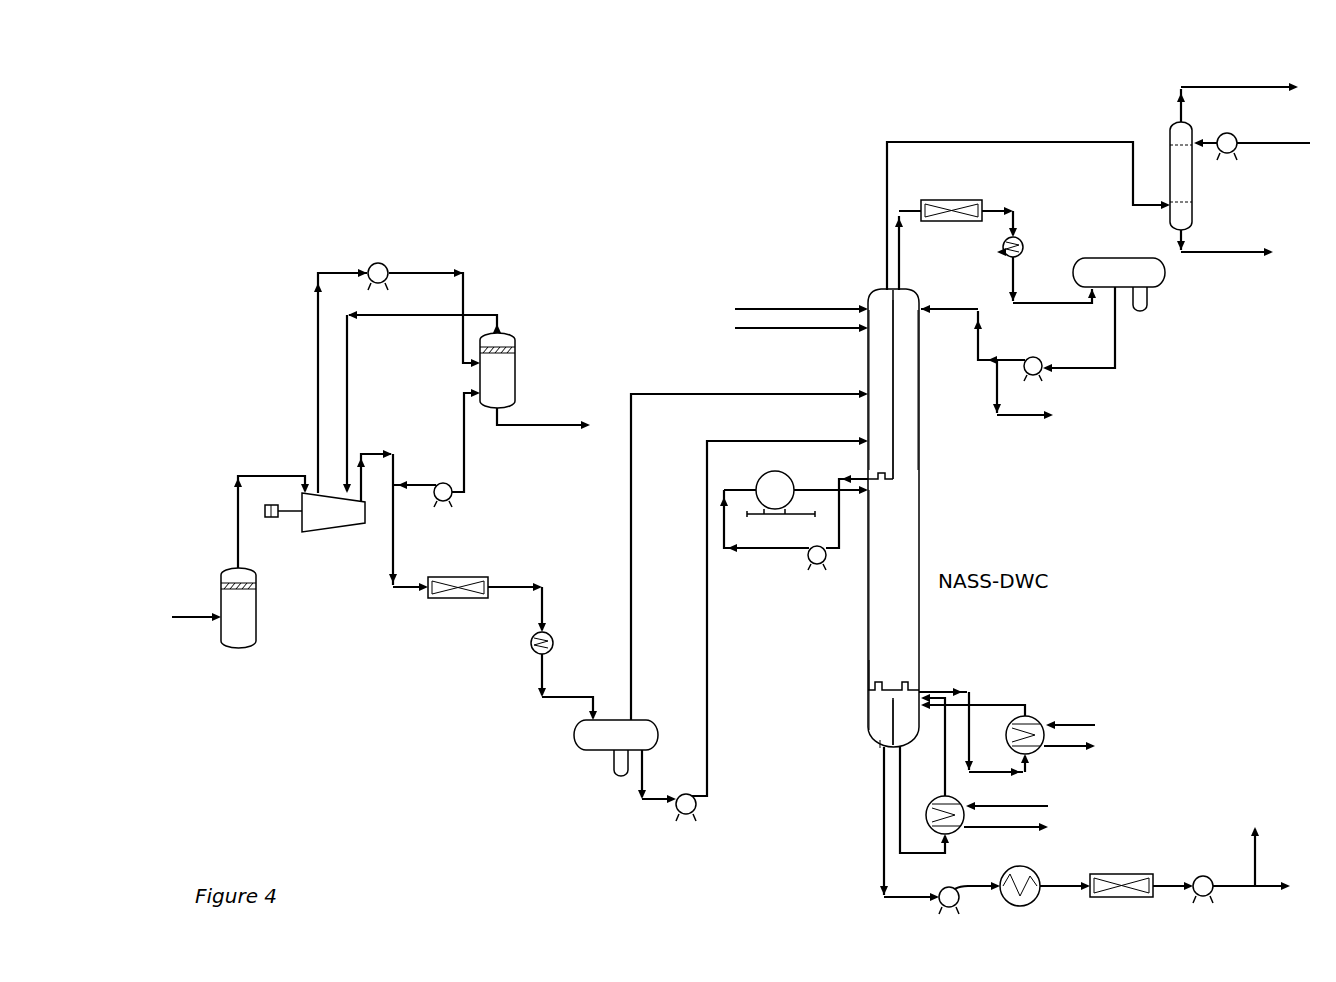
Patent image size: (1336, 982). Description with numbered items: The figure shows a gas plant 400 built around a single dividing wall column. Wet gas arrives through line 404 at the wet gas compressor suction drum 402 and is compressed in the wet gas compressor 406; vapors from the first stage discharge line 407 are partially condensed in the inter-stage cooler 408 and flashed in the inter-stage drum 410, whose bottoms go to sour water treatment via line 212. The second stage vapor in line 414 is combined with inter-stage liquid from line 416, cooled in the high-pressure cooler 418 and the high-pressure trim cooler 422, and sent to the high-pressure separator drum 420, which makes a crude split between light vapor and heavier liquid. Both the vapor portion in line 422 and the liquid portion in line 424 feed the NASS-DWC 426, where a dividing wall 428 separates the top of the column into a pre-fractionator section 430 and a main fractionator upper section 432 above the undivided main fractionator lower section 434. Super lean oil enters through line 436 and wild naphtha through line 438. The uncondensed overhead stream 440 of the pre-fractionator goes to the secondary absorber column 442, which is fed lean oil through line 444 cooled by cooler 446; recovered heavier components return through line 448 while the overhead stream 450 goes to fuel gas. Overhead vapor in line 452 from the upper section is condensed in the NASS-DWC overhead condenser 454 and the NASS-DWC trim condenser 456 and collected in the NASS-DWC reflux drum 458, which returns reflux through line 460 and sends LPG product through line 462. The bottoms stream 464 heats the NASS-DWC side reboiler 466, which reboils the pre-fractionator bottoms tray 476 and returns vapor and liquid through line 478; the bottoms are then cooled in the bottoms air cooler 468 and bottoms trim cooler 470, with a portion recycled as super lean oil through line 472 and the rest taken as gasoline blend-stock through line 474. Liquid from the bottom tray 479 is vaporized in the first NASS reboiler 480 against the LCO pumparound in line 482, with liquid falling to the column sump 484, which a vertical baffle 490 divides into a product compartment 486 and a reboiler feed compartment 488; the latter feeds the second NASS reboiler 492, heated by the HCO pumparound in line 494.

The gas plant 400 is at (274, 155).
The wet gas compressor suction drum 402 is at (256, 607).
The line 404 is at (200, 614).
The wet gas compressor 406 is at (300, 527).
The first stage discharge line 407 is at (318, 372).
The inter-stage cooler 408 is at (377, 262).
The inter-stage drum 410 is at (516, 368).
The line 212 is at (510, 427).
The line 414 is at (358, 458).
The line 416 is at (463, 418).
The high-pressure cooler 418 is at (445, 557).
The high-pressure separator drum 420 is at (575, 730).
The high-pressure trim cooler / vapor portion line 422 is at (528, 645).
The line 424 is at (707, 522).
The NASS-DWC 426 is at (920, 533).
The dividing wall 428 is at (893, 338).
The pre-fractionator section 430 is at (872, 368).
The main fractionator upper section 432 is at (908, 373).
The main fractionator lower section 434 is at (880, 600).
The line 436 is at (812, 305).
The line 438 is at (740, 330).
The overhead stream 440 is at (887, 190).
The secondary absorber column 442 is at (1170, 142).
The line 444 is at (1298, 140).
The cooler 446 is at (1240, 133).
The line 448 is at (1258, 247).
The secondary absorber column overhead stream 450 is at (1263, 83).
The line 452 is at (901, 247).
The NASS-DWC overhead condenser 454 is at (971, 200).
The NASS-DWC trim condenser 456 is at (1025, 237).
The NASS-DWC reflux drum 458 is at (1140, 255).
The line 460 is at (940, 309).
The line 462 is at (1043, 414).
The bottoms product line 464 is at (799, 516).
The NASS-DWC side reboiler 466 is at (808, 462).
The NASS-DWC bottoms air cooler 468 is at (1093, 874).
The NASS-DWC bottoms trim cooler 470 is at (1197, 877).
The line 472 is at (1255, 825).
The line 474 is at (1268, 882).
The bottoms tray 476 is at (887, 481).
The line 478 is at (815, 475).
The bottom tray 479 is at (905, 685).
The first NASS reboiler 480 is at (1030, 716).
The line 482 is at (1085, 724).
The column sump 484 is at (856, 684).
The product compartment 486 is at (873, 720).
The reboiler feed compartment 488 is at (888, 742).
The vertical baffle 490 is at (905, 727).
The second NASS reboiler 492 is at (956, 800).
The line 494 is at (1040, 806).